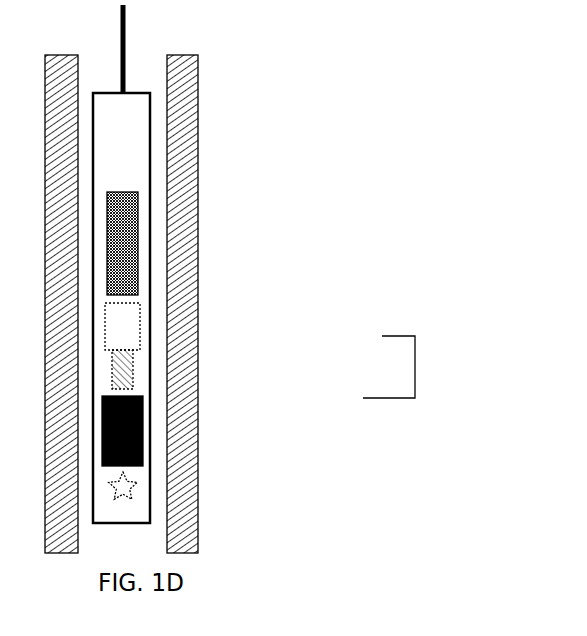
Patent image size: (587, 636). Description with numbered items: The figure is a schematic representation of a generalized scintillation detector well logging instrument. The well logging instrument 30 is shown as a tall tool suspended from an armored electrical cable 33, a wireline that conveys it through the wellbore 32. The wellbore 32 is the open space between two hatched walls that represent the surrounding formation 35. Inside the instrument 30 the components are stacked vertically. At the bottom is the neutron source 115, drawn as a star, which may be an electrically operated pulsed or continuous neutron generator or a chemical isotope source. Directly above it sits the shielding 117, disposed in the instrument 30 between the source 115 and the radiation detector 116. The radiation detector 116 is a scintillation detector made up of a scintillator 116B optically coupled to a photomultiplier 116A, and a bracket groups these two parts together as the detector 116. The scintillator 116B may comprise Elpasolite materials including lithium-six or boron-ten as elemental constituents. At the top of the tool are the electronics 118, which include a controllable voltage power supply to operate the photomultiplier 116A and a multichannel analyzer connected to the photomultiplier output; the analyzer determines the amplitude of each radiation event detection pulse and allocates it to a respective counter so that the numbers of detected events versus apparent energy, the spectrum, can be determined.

The armored electrical cable 33 is at (126, 30).
The Formation 35 is at (198, 87).
The well logging instrument 30 is at (143, 118).
The wellbore 32 is at (160, 183).
The electronics 118 is at (125, 247).
The photomultiplier 116A is at (133, 320).
The scintillator 116B is at (135, 373).
The radiation detector 116 is at (416, 367).
The shielding 117 is at (128, 428).
The neutron source 115 is at (130, 485).